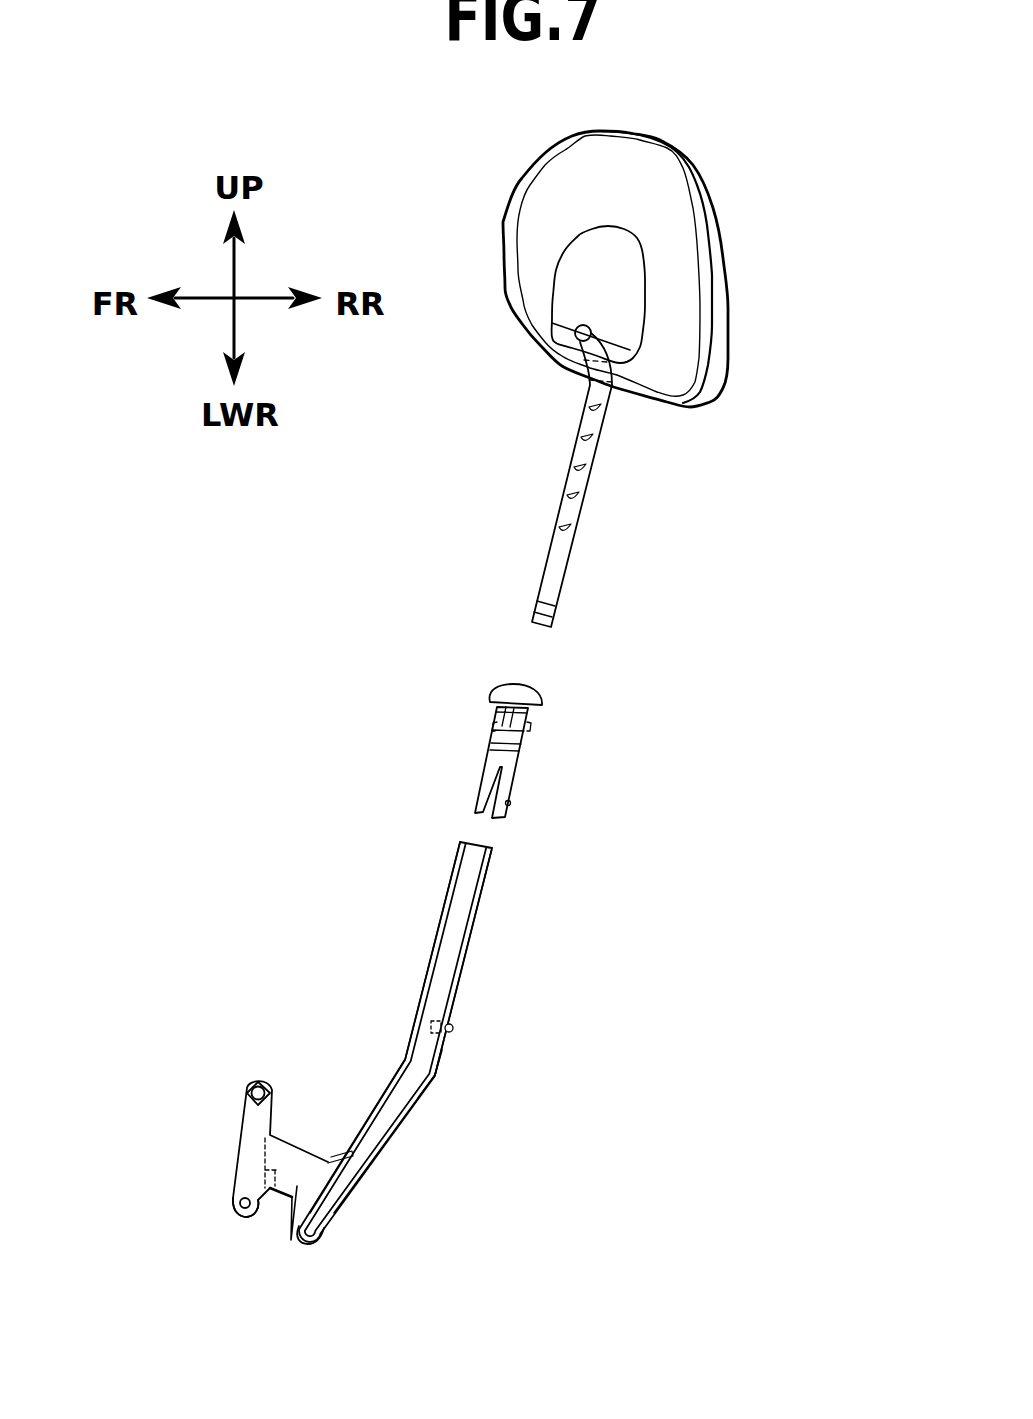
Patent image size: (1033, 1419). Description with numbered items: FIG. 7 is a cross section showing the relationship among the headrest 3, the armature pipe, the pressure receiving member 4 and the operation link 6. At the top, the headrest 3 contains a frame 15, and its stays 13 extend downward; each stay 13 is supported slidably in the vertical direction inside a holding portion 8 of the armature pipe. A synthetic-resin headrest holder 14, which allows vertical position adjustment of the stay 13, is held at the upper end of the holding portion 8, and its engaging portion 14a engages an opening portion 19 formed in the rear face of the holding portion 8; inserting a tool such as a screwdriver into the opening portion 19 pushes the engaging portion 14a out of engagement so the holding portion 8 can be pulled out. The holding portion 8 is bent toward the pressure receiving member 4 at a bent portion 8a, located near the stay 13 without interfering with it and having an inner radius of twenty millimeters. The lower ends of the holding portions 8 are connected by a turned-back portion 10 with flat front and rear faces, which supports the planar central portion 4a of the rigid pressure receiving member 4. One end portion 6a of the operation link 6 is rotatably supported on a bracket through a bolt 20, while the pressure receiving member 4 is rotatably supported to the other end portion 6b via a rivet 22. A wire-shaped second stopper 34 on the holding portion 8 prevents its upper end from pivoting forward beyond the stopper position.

The headrest 3 is at (727, 283).
The frame of the headrest 15 is at (638, 242).
The stays 13 is at (565, 573).
The headrest holder 14 is at (527, 777).
The engaging portion 14a is at (510, 805).
The opening portion 19 is at (482, 916).
The pressure receiving member 4 is at (322, 1214).
The central portion 4a is at (292, 1243).
The holding portion 8 is at (418, 1111).
The bent portion 8a is at (440, 1068).
The turned-back portion 10 is at (307, 1244).
The second stopper 34 is at (455, 1027).
The operation link 6 is at (240, 1133).
The one end portion 6a is at (267, 1080).
The other end portion 6b is at (246, 1216).
The bolt 20 is at (249, 1086).
The rivet 22 is at (233, 1205).